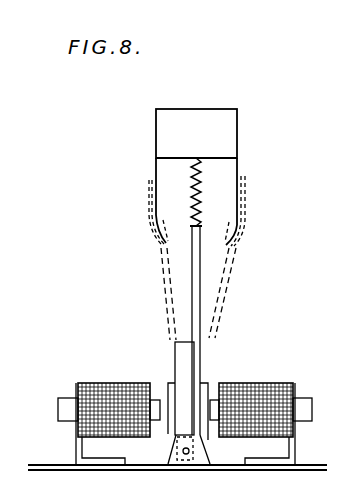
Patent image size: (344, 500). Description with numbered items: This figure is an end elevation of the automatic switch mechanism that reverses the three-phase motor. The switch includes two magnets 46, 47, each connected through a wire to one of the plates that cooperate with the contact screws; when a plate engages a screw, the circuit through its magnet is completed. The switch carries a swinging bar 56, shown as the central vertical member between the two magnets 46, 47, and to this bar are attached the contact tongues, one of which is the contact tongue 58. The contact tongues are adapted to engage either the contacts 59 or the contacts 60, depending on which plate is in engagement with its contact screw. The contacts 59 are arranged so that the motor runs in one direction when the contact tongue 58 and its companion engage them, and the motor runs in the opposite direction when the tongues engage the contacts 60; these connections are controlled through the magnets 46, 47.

The magnet 46 is at (121, 382).
The magnet 47 is at (277, 382).
The swinging bar 56 is at (184, 366).
The contact tongue 58 is at (163, 285).
The contacts 59 is at (154, 191).
The contacts 60 is at (240, 186).